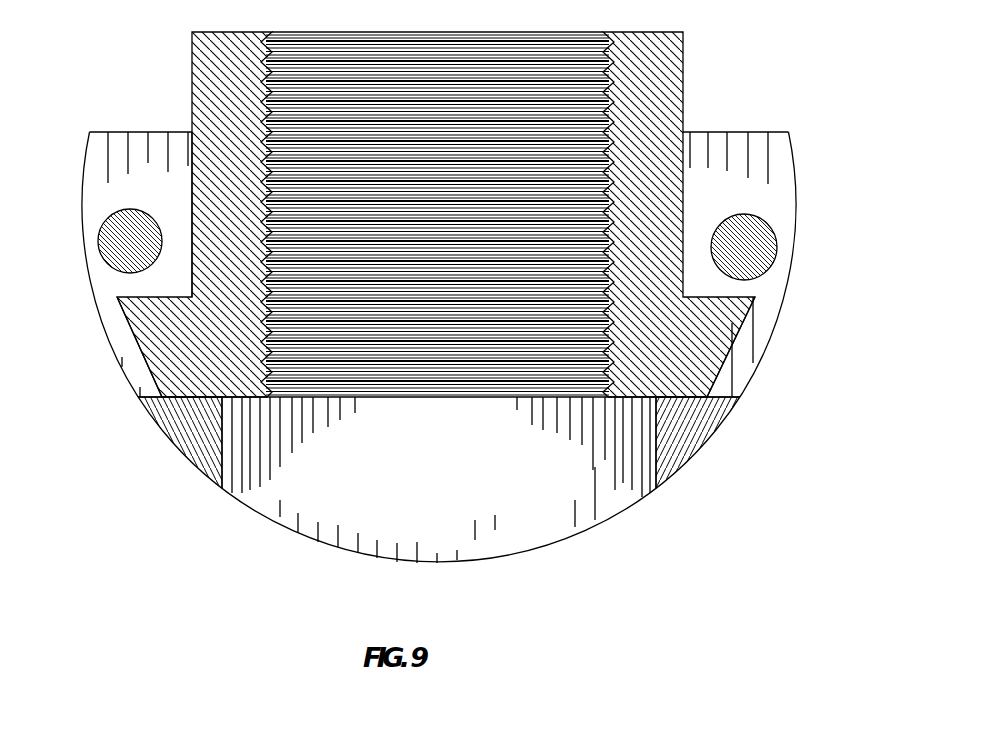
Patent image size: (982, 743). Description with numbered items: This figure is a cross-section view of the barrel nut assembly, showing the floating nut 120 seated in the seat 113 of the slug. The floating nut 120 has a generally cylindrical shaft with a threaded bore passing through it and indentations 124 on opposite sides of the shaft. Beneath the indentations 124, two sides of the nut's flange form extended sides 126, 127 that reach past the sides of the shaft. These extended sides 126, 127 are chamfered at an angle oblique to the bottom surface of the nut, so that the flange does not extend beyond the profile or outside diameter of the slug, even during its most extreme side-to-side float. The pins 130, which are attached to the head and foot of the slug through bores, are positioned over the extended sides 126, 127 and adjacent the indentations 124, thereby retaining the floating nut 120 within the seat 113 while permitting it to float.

The seat 113 is at (413, 476).
The floating nut 120 is at (237, 63).
The indentations 124 is at (191, 252).
The extended side 126 is at (735, 330).
The extended side 127 is at (142, 386).
The pins 130 is at (730, 213).